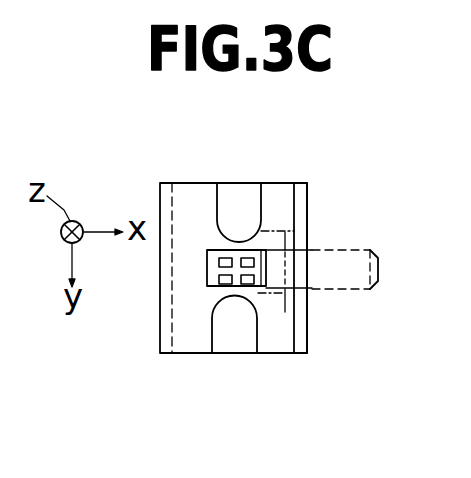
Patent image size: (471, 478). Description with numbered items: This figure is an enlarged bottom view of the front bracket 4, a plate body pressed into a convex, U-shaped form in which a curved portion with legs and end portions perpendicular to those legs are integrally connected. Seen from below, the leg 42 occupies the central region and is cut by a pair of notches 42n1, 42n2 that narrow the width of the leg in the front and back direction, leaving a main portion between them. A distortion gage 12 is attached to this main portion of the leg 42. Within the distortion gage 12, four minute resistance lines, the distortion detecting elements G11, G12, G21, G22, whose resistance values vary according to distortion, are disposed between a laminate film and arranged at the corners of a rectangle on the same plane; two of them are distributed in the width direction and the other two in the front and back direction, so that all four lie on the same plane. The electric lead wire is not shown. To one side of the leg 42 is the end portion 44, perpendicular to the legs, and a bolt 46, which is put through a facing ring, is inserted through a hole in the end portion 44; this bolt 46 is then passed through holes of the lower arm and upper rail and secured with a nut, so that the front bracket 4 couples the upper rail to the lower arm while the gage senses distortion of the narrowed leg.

The front bracket 4 is at (158, 211).
The distortion gage 12 is at (210, 246).
The leg 42 is at (273, 338).
The notch 42n1 is at (258, 210).
The notch 42n2 is at (256, 315).
The end portion 44 is at (300, 308).
The bolt 46 is at (337, 250).
The distortion detecting element G11 is at (244, 264).
The distortion detecting element G12 is at (224, 262).
The distortion detecting element G21 is at (248, 282).
The distortion detecting element G22 is at (226, 280).